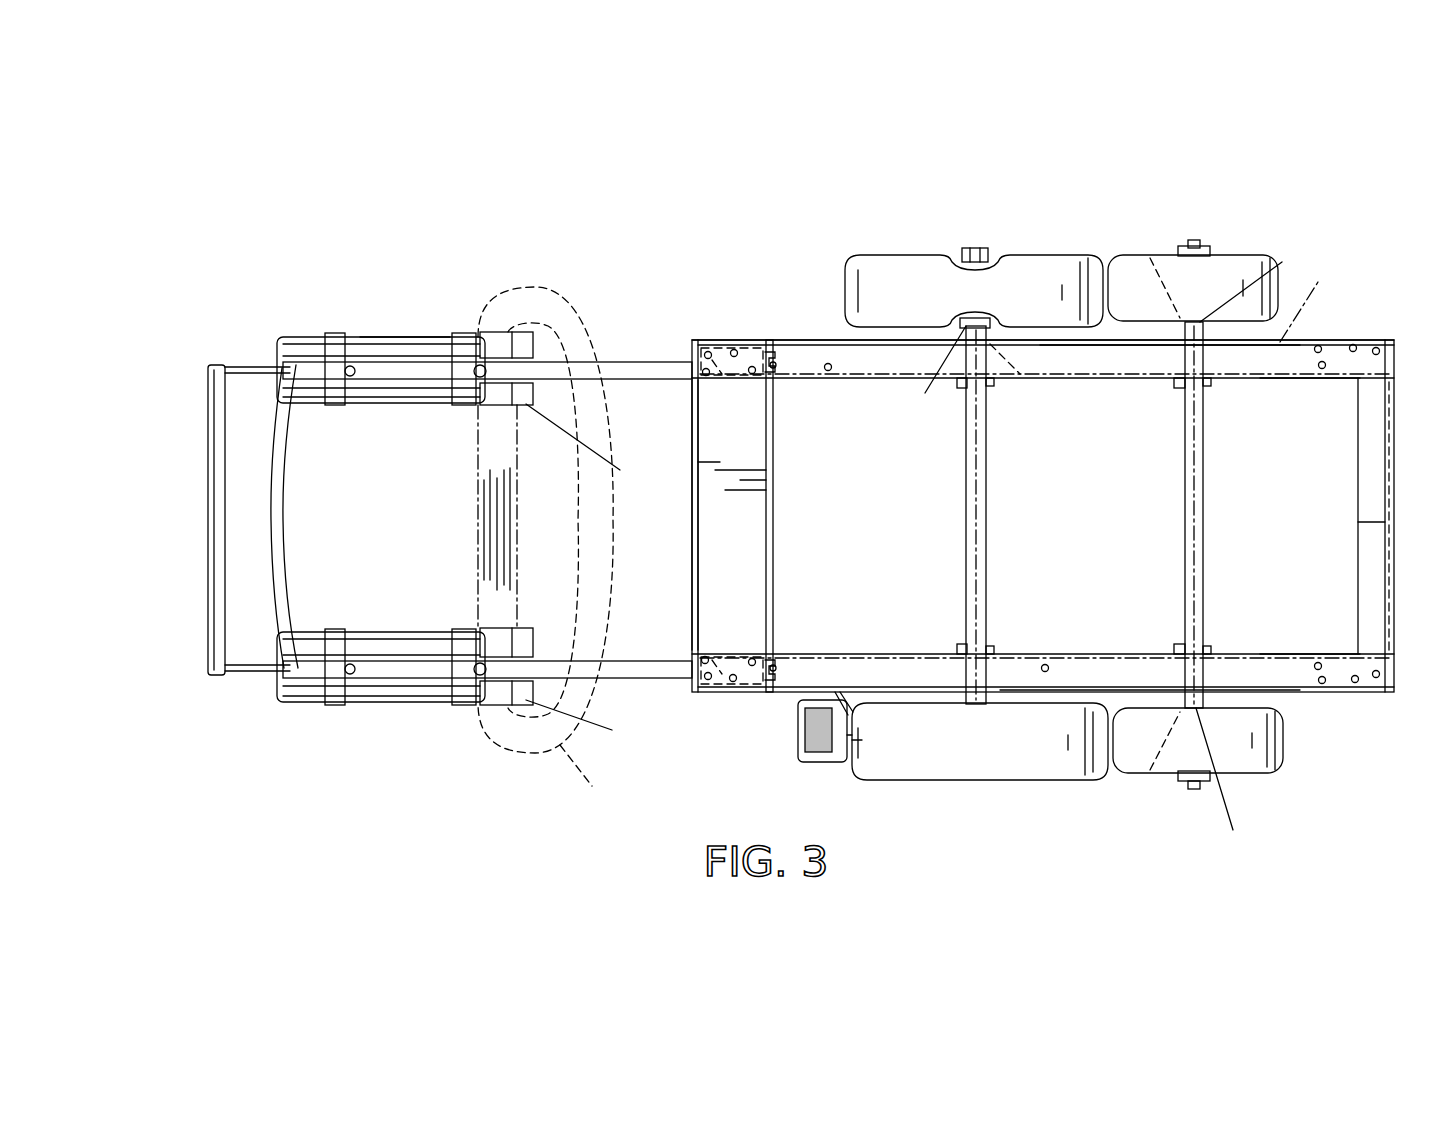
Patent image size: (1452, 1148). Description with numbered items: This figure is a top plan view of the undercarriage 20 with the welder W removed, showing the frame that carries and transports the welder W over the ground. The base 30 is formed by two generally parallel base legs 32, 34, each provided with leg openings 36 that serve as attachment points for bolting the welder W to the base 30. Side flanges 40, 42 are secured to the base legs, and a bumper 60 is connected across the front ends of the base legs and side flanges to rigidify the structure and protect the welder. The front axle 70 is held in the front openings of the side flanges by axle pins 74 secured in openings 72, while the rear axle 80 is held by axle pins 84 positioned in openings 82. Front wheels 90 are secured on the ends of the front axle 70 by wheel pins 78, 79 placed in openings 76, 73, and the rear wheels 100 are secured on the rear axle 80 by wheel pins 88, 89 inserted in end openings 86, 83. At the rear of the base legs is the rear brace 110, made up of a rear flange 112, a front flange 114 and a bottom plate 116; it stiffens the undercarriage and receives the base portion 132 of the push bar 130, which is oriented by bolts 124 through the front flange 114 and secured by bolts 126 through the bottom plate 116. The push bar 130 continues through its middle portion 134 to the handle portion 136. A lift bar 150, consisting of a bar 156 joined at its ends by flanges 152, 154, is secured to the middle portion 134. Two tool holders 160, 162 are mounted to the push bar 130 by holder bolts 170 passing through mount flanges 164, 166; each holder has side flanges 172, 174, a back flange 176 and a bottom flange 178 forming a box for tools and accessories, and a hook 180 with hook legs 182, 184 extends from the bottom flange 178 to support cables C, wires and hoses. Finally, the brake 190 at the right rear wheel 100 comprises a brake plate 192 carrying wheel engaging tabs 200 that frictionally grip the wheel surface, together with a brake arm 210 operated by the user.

The undercarriage 20 is at (753, 250).
The base 30 is at (1360, 336).
The base leg 32 is at (1124, 366).
The base leg 34 is at (1127, 666).
The leg openings 36 is at (732, 349).
The side flange 40 is at (1276, 650).
The side flange 42 is at (1293, 382).
The bumper 60 is at (1398, 540).
The front axle 70 is at (1205, 528).
The openings 72 is at (1184, 389).
The opening 73 is at (1150, 262).
The axle pins 74 is at (1206, 384).
The opening 76 is at (1197, 240).
The wheel pin 78 is at (1182, 246).
The wheel pin 79 is at (1253, 541).
The rear axle 80 is at (988, 526).
The openings 82 is at (966, 390).
The end opening 83 is at (1010, 366).
The axle pins 84 is at (992, 384).
The end opening 86 is at (987, 254).
The wheel pin 88 is at (963, 248).
The wheel pin 89 is at (935, 372).
The front wheel 90 is at (1230, 262).
The rear wheel 100 is at (912, 270).
The rear brace 110 is at (690, 541).
The rear flange 112 is at (692, 466).
The front flange 114 is at (773, 494).
The bottom plate 116 is at (752, 520).
The bolts 124 is at (775, 352).
The bolts 126 is at (713, 358).
The push bar 130 is at (404, 358).
The base portion 132 is at (748, 350).
The middle portion 134 is at (558, 340).
The handle portion 136 is at (292, 519).
The lift bar 150 is at (205, 456).
The flange 152 is at (262, 673).
The flange 154 is at (248, 362).
The bar 156 is at (213, 566).
The tool holder 160 is at (377, 704).
The tool holder 162 is at (367, 332).
The mount flange 164 is at (333, 334).
The mount flange 166 is at (463, 334).
The holder bolt 170 is at (484, 364).
The side flange 172 is at (398, 404).
The side flange 174 is at (386, 336).
The back flange 176 is at (430, 342).
The bottom flange 178 is at (496, 402).
The hook 180 is at (540, 396).
The hook leg 182 is at (589, 573).
The hook leg 184 is at (526, 332).
The brake 190 is at (790, 754).
The brake plate 192 is at (852, 714).
The wheel engaging tabs 200 is at (860, 740).
The brake arm 210 is at (815, 766).
The cables C is at (586, 780).
The welder W is at (1311, 296).